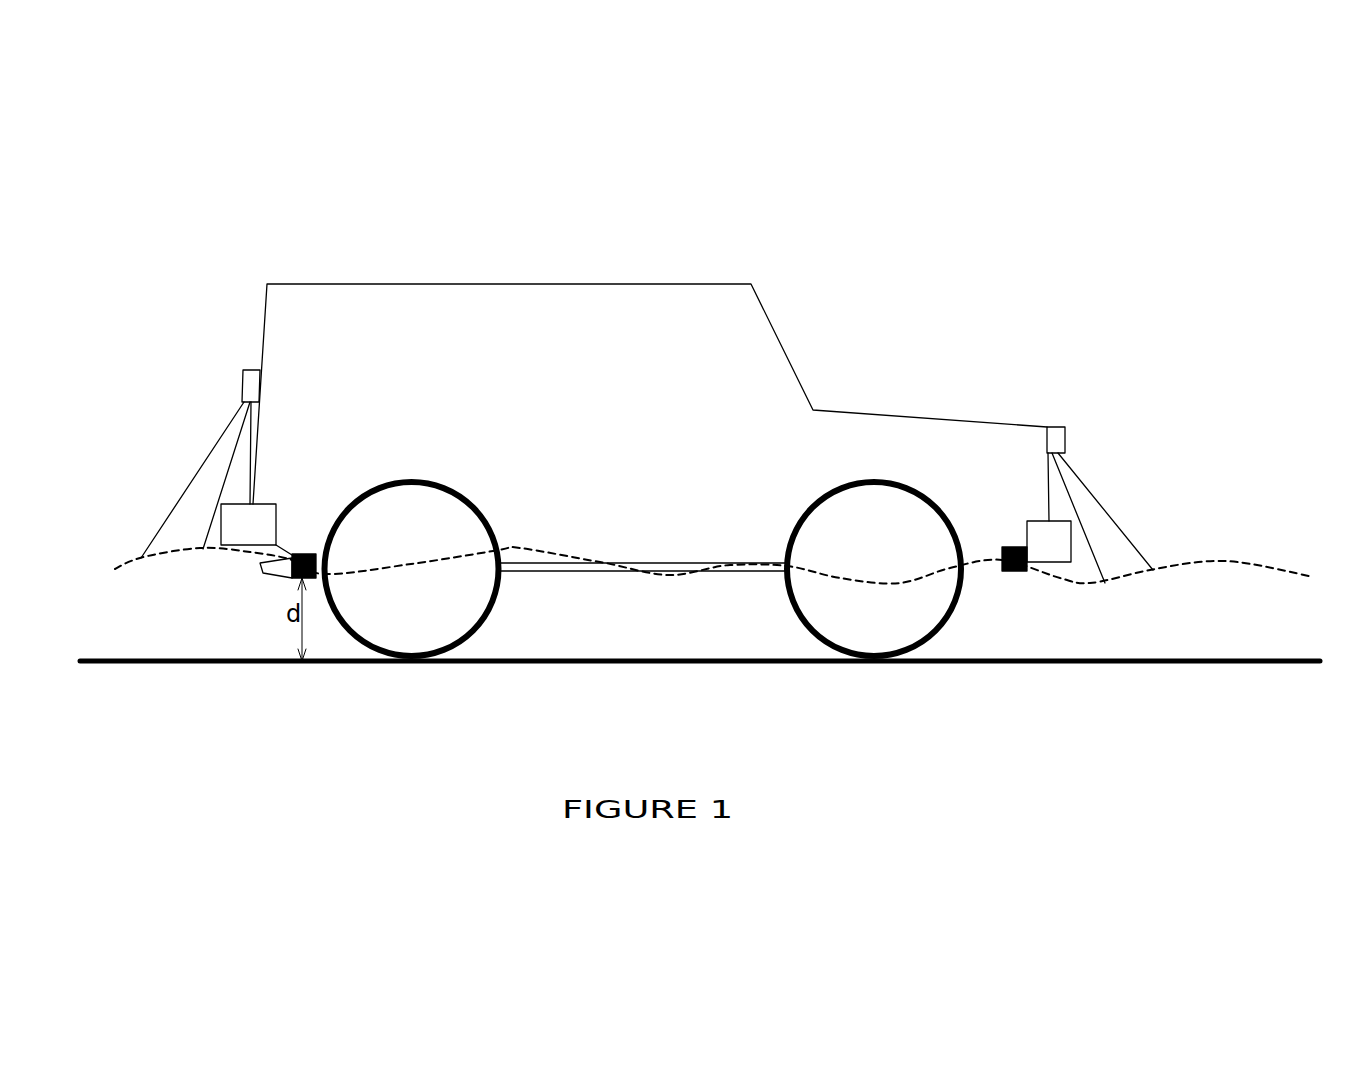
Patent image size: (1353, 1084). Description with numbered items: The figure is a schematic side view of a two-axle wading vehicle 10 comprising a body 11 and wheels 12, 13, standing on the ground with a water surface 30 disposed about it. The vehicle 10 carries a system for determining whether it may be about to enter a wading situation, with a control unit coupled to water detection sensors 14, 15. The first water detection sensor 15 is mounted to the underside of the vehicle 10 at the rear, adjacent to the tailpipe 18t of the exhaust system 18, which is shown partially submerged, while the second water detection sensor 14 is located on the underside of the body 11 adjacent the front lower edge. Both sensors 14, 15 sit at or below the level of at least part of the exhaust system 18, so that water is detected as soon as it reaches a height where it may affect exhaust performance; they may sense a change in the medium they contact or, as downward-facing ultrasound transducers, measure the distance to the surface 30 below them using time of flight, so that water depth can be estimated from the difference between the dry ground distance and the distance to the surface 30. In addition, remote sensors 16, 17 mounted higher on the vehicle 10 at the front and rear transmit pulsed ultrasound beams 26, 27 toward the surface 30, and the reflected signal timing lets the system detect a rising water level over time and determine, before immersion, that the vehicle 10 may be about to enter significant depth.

The vehicle 10 is at (912, 266).
The body 11 is at (536, 368).
The wheel 12 is at (887, 555).
The wheel 13 is at (423, 551).
The water detection sensor 14 is at (1009, 571).
The water detection sensor 15 is at (301, 553).
The remote sensor 16 is at (1058, 433).
The remote sensor 17 is at (247, 380).
The exhaust system 18 is at (758, 567).
The tailpipe 18t is at (265, 577).
The ultrasound beam 26 is at (1112, 545).
The ultrasound beam 27 is at (203, 490).
The water surface 30 is at (1223, 560).